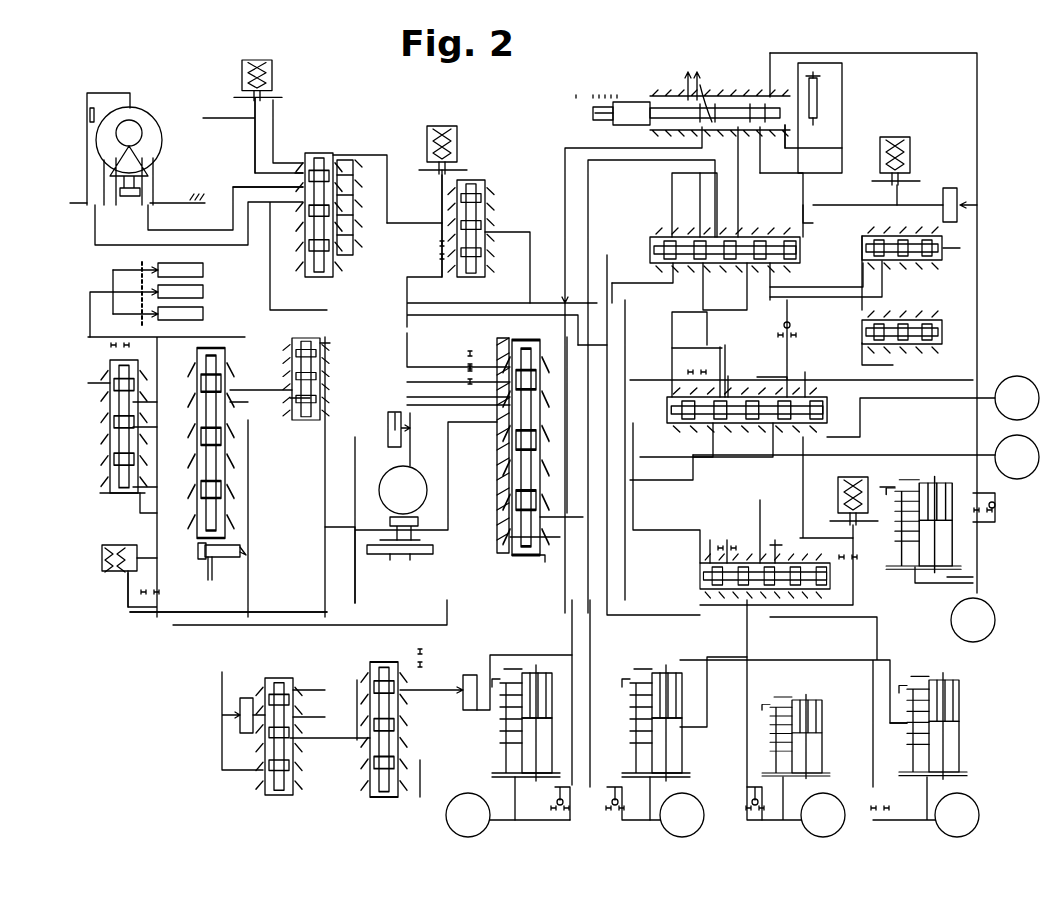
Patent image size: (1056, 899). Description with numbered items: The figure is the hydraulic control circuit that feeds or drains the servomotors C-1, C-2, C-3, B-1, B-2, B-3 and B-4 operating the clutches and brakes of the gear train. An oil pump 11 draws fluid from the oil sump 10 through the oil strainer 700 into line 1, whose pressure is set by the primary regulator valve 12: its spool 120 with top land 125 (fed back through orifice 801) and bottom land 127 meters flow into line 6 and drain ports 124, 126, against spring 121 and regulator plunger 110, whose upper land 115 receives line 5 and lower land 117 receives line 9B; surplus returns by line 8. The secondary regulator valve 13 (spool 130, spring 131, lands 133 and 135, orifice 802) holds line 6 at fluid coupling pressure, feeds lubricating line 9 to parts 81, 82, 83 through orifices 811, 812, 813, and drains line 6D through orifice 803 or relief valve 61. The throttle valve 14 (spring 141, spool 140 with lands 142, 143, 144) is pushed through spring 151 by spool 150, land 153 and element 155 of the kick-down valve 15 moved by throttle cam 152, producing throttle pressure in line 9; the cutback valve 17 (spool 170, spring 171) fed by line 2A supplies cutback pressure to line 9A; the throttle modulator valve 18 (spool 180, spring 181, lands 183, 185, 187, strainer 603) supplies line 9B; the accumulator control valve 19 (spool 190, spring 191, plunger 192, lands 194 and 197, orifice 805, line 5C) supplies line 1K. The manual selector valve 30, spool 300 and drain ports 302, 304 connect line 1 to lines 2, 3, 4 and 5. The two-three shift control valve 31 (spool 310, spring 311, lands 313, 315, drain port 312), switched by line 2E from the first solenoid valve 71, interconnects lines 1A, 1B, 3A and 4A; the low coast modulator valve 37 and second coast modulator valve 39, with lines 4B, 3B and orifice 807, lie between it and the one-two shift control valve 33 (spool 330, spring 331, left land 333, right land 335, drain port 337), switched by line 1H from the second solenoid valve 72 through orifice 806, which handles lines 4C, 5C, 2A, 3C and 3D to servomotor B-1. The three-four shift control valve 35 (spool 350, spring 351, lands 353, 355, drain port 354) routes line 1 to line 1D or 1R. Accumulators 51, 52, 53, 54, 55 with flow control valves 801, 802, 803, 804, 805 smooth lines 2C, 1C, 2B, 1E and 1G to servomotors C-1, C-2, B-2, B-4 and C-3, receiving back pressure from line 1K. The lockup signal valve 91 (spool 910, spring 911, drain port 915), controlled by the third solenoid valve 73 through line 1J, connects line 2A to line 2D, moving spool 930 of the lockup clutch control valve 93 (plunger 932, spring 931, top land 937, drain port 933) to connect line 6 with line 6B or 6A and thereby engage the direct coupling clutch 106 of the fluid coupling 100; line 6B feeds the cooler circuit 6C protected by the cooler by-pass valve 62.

The torque converter 100 is at (112, 82).
The direct coupling clutch 106 is at (85, 100).
The cooler by-pass valve 62 is at (270, 84).
The cooler circuit 6C is at (254, 150).
The lubricating part 81 is at (204, 270).
The lubricating part 82 is at (204, 292).
The lubricating part 83 is at (204, 316).
The orifice 811 is at (142, 268).
The orifice 812 is at (142, 292).
The orifice 813 is at (142, 316).
The lockup clutch control valve 93 is at (308, 280).
The top land 937 is at (340, 158).
The line 6B is at (305, 160).
The spool 930 is at (338, 178).
The drain port 933 is at (338, 198).
The line 6 is at (300, 205).
The line 6A is at (308, 230).
The small diameter plunger 932 is at (305, 247).
The spring 931 is at (328, 280).
The line 2D is at (405, 223).
The orifice 805 is at (870, 828).
The line 1J is at (442, 198).
The third solenoid valve 73 is at (460, 134).
The lockup signal valve 91 is at (470, 278).
The spool 910 is at (480, 194).
The drain port 915 is at (484, 214).
The spring 911 is at (482, 258).
The line 2A is at (520, 236).
The manual selector valve 30 is at (595, 130).
The drain port 302 is at (669, 88).
The spool 300 is at (714, 88).
The line 2 is at (765, 90).
The line 4 is at (797, 72).
The drain port 304 is at (817, 92).
The line 5 is at (702, 140).
The line 1 is at (739, 140).
The line 3 is at (790, 142).
The 2-3 shift control valve 31 is at (650, 258).
The left land 313 is at (712, 222).
The spring 311 is at (686, 236).
The drain port 312 is at (776, 236).
The line 2E is at (803, 222).
The spool 310 is at (680, 262).
The right land 315 is at (796, 262).
The line 4A is at (703, 283).
The line 1B is at (590, 750).
The line 1A is at (770, 300).
The line 3A is at (795, 292).
The oil passage 4B is at (703, 345).
The first solenoid valve 71 is at (897, 137).
The low coast modulator valve 37 is at (862, 252).
The second coast modulator valve 39 is at (860, 332).
The oil passage 3B is at (895, 362).
The orifice 807 is at (798, 346).
The hydraulic servomotor B-1 is at (933, 406).
The hydraulic servomotor B-3 is at (1017, 457).
The line 5C is at (920, 455).
The 1-2 shift control valve 33 is at (690, 430).
The line 4C is at (705, 360).
The right land 335 is at (727, 355).
The line 3C is at (777, 377).
The drain port 337 is at (767, 392).
The spring 331 is at (682, 397).
The spool 330 is at (668, 417).
The left land 333 is at (688, 425).
The line 3D is at (773, 433).
The line 1H is at (803, 467).
The second solenoid valve 72 is at (868, 484).
The orifice 806 is at (855, 552).
The accumulator 51 is at (905, 550).
The orifice 801 is at (1006, 530).
The line 2C is at (975, 578).
The hydraulic servomotor C-1 is at (973, 620).
The 3-4 shift control valve 35 is at (688, 580).
The left land 353 is at (710, 545).
The spool 350 is at (740, 560).
The drain port 354 is at (782, 545).
The spring 351 is at (717, 596).
The right land 355 is at (790, 589).
The line 1D is at (747, 615).
The line 1R is at (770, 615).
The orifice 802 is at (135, 362).
The secondary regulator valve 13 is at (106, 493).
The top land 133 is at (88, 383).
The line 9 is at (100, 396).
The spool 130 is at (108, 423).
The drain line 6D is at (145, 444).
The spring 131 is at (108, 455).
The bottom land 135 is at (110, 472).
The line 9B is at (143, 500).
The draining pressure relief valve 61 is at (110, 573).
The orifice 803 is at (165, 597).
The return line 8 is at (335, 527).
The throttle valve 14 is at (197, 412).
The spring 141 is at (197, 350).
The smaller diameter land 144 is at (200, 368).
The medium diameter land 143 is at (200, 388).
The larger diameter land 142 is at (200, 432).
The spool 140 is at (220, 376).
The spool 150 is at (197, 480).
The spring 151 is at (232, 462).
The top land 153 is at (232, 482).
The kick-down valve 15 is at (198, 521).
The spring 155 is at (218, 510).
The throttle cam 152 is at (218, 573).
The line 9A is at (290, 385).
The cutback valve 17 is at (290, 359).
The spool 170 is at (322, 370).
The spring 171 is at (322, 410).
The oil pump 11 is at (388, 475).
The oil sump 10 is at (408, 556).
The oil strainer 700 is at (400, 527).
The primary regulator valve 12 is at (500, 563).
The top land 125 is at (538, 365).
The spool 120 is at (560, 406).
The bottom land 127 is at (560, 429).
The spring 121 is at (538, 450).
The upper land 115 is at (538, 475).
The regulator plunger 110 is at (538, 495).
The drain port 124 is at (500, 425).
The drain port 126 is at (500, 465).
The lower land 117 is at (545, 562).
The throttle modulator valve 18 is at (258, 796).
The strainer 603 is at (246, 703).
The flow control valve 804 is at (305, 688).
The large diameter land 187 is at (307, 717).
The intermediate land 183 is at (265, 755).
The spool 180 is at (293, 760).
The spring 181 is at (293, 790).
The bottom land 185 is at (272, 805).
The bottom land 194 is at (357, 712).
The accumulator control valve 19 is at (370, 765).
The top land 197 is at (378, 665).
The spool 190 is at (400, 718).
The spring 191 is at (400, 738).
The small diameter plunger 192 is at (400, 762).
The line 1K is at (708, 688).
The accumulator 53 is at (500, 752).
The accumulator 52 is at (683, 752).
The accumulator 54 is at (823, 752).
The accumulator 55 is at (953, 752).
The hydraulic servomotor B-2 is at (468, 815).
The line 2B is at (515, 820).
The hydraulic servomotor C-2 is at (682, 815).
The line 1C is at (648, 820).
The hydraulic servomotor B-4 is at (823, 815).
The line 1E is at (785, 820).
The hydraulic servomotor C-3 is at (957, 815).
The line 1G is at (920, 820).